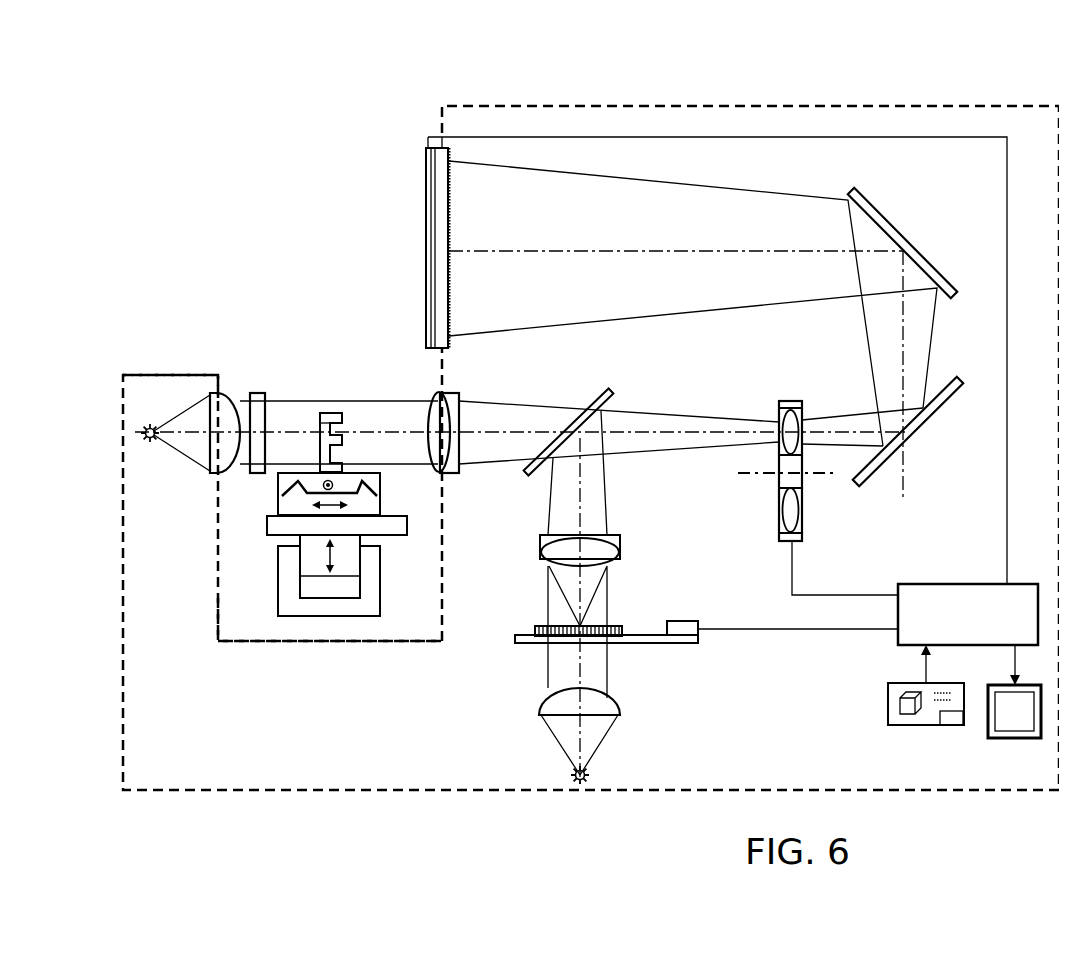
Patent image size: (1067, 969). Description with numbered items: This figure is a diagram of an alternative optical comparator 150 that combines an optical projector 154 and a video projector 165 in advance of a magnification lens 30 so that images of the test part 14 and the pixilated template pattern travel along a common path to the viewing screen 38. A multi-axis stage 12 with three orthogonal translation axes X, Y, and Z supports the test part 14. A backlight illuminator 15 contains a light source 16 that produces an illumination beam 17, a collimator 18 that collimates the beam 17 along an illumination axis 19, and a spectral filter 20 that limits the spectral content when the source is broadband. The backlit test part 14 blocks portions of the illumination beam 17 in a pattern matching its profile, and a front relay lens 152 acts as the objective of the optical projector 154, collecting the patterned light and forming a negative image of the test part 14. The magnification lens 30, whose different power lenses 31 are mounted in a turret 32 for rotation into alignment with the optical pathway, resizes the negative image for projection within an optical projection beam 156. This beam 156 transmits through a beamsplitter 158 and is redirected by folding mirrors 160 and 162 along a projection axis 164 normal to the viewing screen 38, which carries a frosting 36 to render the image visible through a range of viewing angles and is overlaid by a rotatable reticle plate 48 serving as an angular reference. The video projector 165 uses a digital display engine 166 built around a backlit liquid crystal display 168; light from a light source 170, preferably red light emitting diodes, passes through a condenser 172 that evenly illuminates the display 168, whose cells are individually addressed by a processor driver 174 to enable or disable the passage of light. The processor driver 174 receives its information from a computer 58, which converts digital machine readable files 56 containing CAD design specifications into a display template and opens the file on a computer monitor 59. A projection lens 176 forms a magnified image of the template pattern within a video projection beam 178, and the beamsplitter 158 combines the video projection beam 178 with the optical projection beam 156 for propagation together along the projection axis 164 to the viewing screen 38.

The multi-axis stage 12 is at (268, 588).
The test part 14 is at (330, 414).
The backlight illuminator 15 is at (188, 383).
The light source 16 is at (153, 426).
The illumination beam 17 is at (181, 459).
The collimator 18 is at (216, 394).
The illumination axis 19 is at (292, 432).
The spectral filter 20 is at (256, 394).
The magnification lens 30 is at (768, 493).
The lenses 31 is at (828, 410).
The turret 32 is at (778, 408).
The frosting 36 is at (446, 298).
The viewing screen 38 is at (431, 188).
The rotatable reticle plate 48 is at (427, 290).
The digital machine readable files 56 is at (887, 707).
The computer 58 is at (968, 614).
The computer monitor 59 is at (988, 740).
The optical comparator 150 is at (512, 100).
The front relay lens 152 is at (437, 400).
The optical projector 154 is at (676, 396).
The optical projection beam 156 is at (528, 398).
The beamsplitter 158 is at (600, 392).
The folding mirror 160 is at (948, 380).
The folding mirror 162 is at (878, 232).
The projection axis 164 is at (538, 254).
The video projector 165 is at (646, 548).
The digital display engine 166 is at (647, 669).
The liquid crystal display 168 is at (540, 627).
The light source 170 is at (592, 775).
The condenser 172 is at (556, 705).
The processor driver 174 is at (673, 622).
The projection lens 176 is at (540, 545).
The video projection beam 178 is at (699, 182).